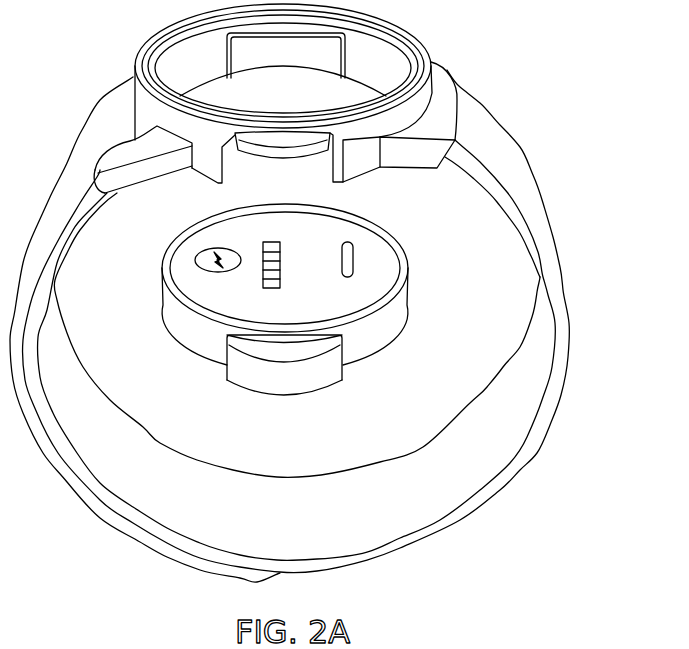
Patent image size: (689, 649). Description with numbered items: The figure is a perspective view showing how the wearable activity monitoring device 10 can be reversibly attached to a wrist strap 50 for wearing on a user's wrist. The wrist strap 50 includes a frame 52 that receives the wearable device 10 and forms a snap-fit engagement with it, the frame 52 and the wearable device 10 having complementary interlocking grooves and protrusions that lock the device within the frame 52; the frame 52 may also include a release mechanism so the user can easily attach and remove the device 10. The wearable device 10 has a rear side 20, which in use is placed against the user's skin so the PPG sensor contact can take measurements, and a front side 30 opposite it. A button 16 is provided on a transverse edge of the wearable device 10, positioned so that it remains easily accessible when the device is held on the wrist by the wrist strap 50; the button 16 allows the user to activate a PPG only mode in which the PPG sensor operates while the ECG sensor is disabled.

The wearable activity monitoring device 10 is at (445, 315).
The button 16 is at (305, 365).
The rear side 20 is at (197, 378).
The front side 30 is at (320, 257).
The wrist strap 50 is at (90, 140).
The frame 52 is at (312, 138).